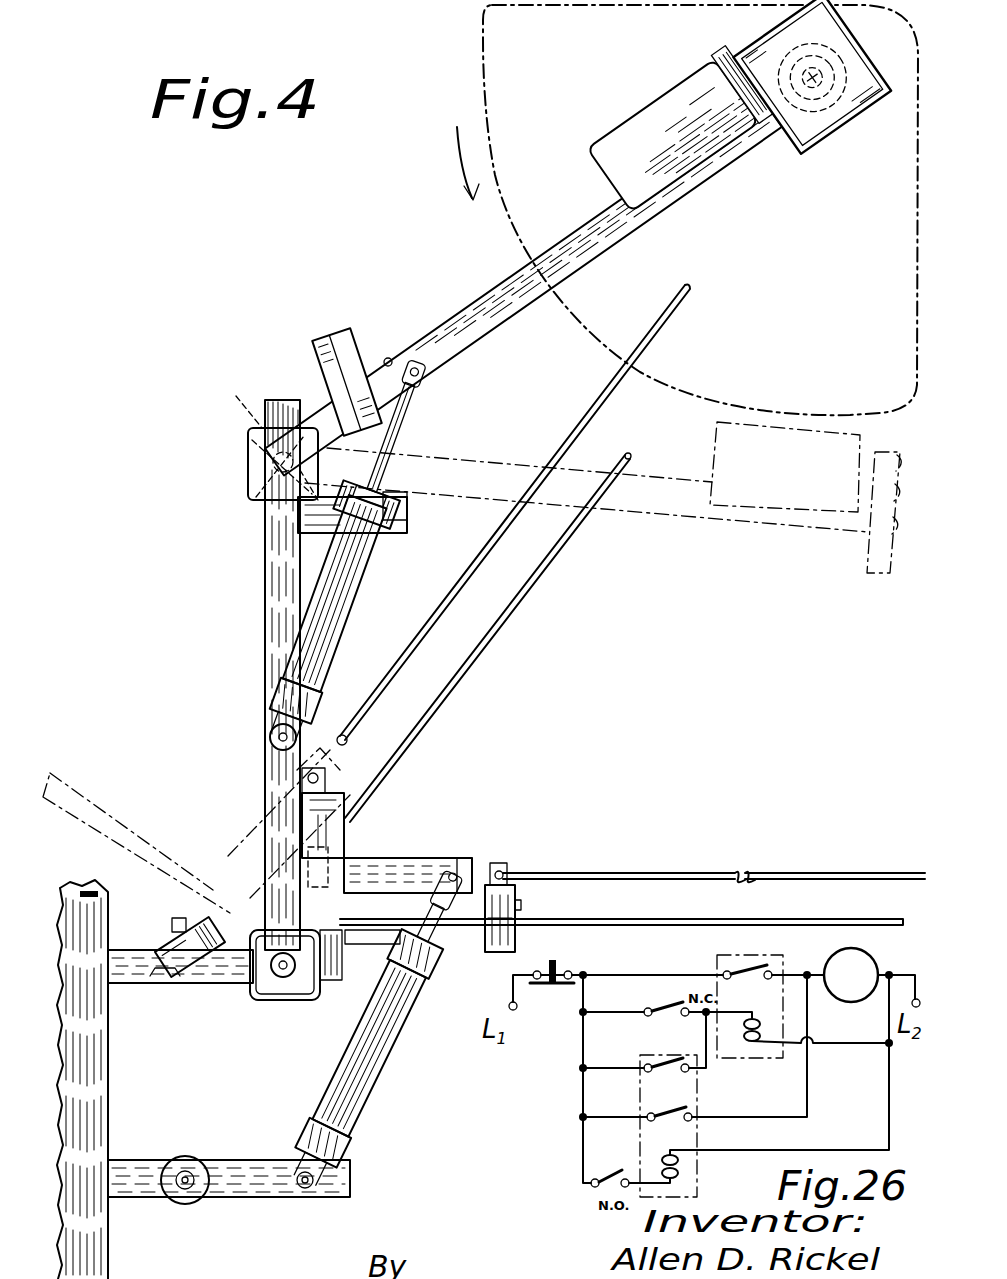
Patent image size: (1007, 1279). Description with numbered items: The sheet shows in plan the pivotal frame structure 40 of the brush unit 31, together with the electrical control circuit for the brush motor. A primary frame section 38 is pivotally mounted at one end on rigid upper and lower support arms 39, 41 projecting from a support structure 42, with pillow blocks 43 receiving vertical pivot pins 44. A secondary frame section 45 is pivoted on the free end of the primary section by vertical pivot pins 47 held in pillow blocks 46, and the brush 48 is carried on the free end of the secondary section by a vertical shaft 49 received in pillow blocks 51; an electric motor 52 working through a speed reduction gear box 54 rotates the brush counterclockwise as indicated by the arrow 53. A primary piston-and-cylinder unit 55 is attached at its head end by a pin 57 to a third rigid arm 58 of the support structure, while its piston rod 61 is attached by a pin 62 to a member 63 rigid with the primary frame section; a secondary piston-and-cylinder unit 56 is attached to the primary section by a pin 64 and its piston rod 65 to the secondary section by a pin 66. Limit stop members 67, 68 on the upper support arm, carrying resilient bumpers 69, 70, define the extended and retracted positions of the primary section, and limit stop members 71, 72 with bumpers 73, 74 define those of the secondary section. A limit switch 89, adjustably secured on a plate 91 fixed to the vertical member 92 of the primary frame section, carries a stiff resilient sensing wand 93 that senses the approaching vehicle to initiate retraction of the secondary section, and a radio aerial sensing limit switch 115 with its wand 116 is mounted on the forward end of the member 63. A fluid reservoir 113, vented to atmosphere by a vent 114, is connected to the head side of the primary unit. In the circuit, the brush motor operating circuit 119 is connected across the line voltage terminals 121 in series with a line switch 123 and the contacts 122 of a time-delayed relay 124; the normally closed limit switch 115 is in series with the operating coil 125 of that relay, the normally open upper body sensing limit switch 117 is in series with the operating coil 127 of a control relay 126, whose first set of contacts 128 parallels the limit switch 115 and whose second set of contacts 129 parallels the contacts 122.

In FIG. 4, the brush unit 31 is at (476, 30).
In FIG. 4, the brush 48 is at (480, 76).
In FIG. 4, the arrow 53 is at (462, 158).
In FIG. 4, the secondary frame section 45 is at (498, 298).
In FIG. 4, the electric motor 52 is at (668, 105).
In FIG. 4, the speed reduction gear box 54 is at (758, 50).
In FIG. 4, the vertical shaft 49 is at (855, 106).
In FIG. 4, the pillow blocks 51 is at (832, 118).
In FIG. 4, the limit stop member 72 is at (335, 362).
In FIG. 4, the bumper 74 is at (388, 357).
In FIG. 4, the pin 66 is at (424, 371).
In FIG. 4, the piston rod 65 is at (402, 408).
In FIG. 4, the pillow blocks 46 is at (264, 408).
In FIG. 4, the vertical pivot pins 47 is at (250, 460).
In FIG. 4, the wand 116 is at (563, 440).
In FIG. 4, the bumper 73 is at (410, 500).
In FIG. 4, the limit stop member 71 is at (396, 530).
In FIG. 4, the pivotal frame structure 40 is at (232, 514).
In FIG. 4, the primary frame section 38 is at (280, 572).
In FIG. 4, the secondary piston-and-cylinder unit 56 is at (356, 586).
In FIG. 4, the sensing wand 93 is at (568, 542).
In FIG. 4, the pin 64 is at (270, 735).
In FIG. 4, the vertical member 92 is at (268, 845).
In FIG. 4, the bumper 69 is at (340, 842).
In FIG. 4, the bumper 70 is at (183, 913).
In FIG. 4, the limit switch 89 is at (334, 868).
In FIG. 4, the member 63 is at (398, 872).
In FIG. 4, the pin 62 is at (470, 860).
In FIG. 4, the limit stop member 68 is at (170, 935).
In FIG. 4, the radio aerial sensing limit switch 115 is at (516, 912).
In FIG. 26, the radio aerial sensing limit switch 115 is at (668, 1005).
In FIG. 4, the upper support arm 39 is at (135, 960).
In FIG. 4, the pillow blocks 43 is at (248, 963).
In FIG. 4, the vertical pivot pins 44 is at (283, 990).
In FIG. 4, the lower support arm 41 is at (185, 985).
In FIG. 4, the limit stop member 67 is at (340, 975).
In FIG. 4, the piston rod 61 is at (430, 958).
In FIG. 4, the plate 91 is at (342, 940).
In FIG. 4, the support structure 42 is at (98, 1100).
In FIG. 4, the vent 114 is at (190, 1175).
In FIG. 4, the fluid reservoir 113 is at (180, 1200).
In FIG. 4, the third rigid arm 58 is at (260, 1200).
In FIG. 4, the pin 57 is at (310, 1190).
In FIG. 4, the primary piston-and-cylinder unit 55 is at (377, 1060).
In FIG. 26, the line voltage terminals 121 is at (518, 1006).
In FIG. 26, the line switch 123 is at (556, 962).
In FIG. 26, the relay 124 is at (720, 968).
In FIG. 26, the contacts 122 is at (754, 958).
In FIG. 26, the operating coil 125 is at (750, 1044).
In FIG. 26, the brush motor operating circuit 119 is at (835, 1000).
In FIG. 26, the first set of contacts 128 is at (676, 1044).
In FIG. 26, the control relay 126 is at (698, 1094).
In FIG. 26, the second set of contacts 129 is at (655, 1120).
In FIG. 26, the operating coil 127 is at (681, 1170).
In FIG. 26, the limit switch 117 is at (610, 1178).